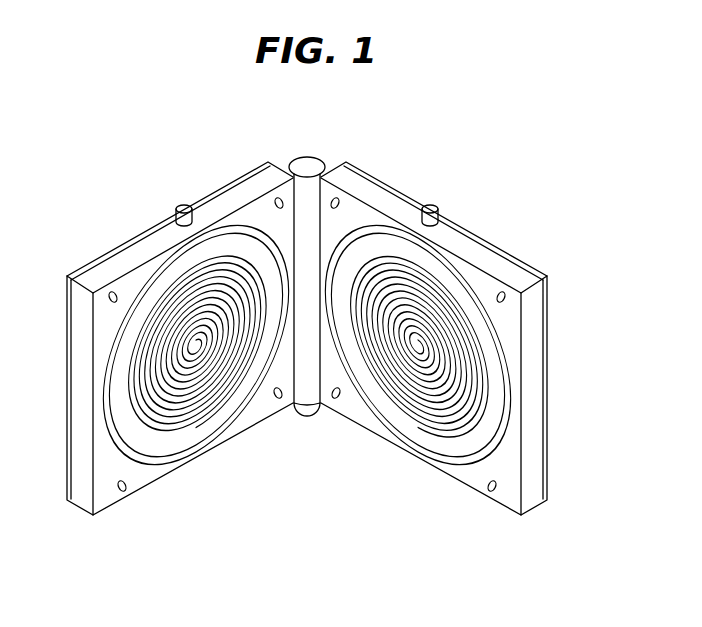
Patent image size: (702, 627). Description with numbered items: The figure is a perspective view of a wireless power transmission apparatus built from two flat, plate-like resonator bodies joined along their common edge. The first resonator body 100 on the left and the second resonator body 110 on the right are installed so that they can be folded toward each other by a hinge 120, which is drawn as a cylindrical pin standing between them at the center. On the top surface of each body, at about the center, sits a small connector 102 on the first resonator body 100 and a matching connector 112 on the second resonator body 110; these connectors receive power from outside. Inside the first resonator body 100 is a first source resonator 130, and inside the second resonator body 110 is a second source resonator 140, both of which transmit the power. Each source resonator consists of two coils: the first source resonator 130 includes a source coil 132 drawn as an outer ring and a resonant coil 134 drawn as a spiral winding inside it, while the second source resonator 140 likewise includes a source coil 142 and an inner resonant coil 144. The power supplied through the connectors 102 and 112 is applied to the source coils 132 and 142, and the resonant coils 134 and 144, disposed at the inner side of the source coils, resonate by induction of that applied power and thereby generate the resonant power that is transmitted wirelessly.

The first resonator body 100 is at (132, 250).
The connector 102 is at (183, 206).
The second resonator body 110 is at (493, 257).
The connector 112 is at (429, 207).
The hinge 120 is at (309, 164).
The first source resonator 130 is at (195, 376).
The source coil 132 is at (167, 458).
The resonant coil 134 is at (198, 362).
The second source resonator 140 is at (417, 376).
The source coil 142 is at (447, 458).
The resonant coil 144 is at (420, 363).